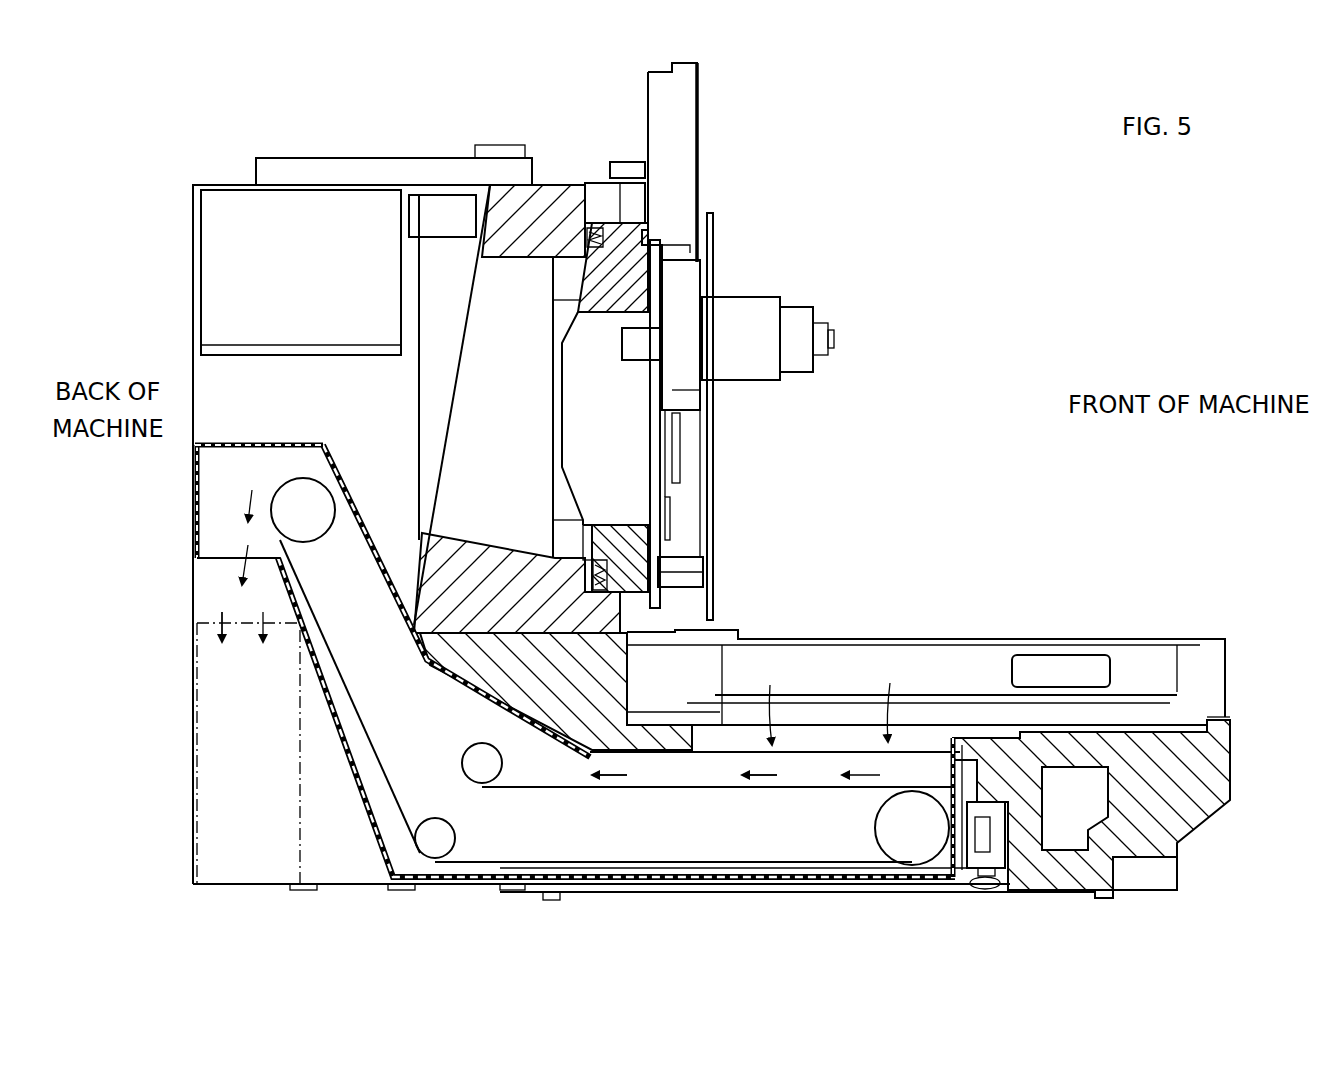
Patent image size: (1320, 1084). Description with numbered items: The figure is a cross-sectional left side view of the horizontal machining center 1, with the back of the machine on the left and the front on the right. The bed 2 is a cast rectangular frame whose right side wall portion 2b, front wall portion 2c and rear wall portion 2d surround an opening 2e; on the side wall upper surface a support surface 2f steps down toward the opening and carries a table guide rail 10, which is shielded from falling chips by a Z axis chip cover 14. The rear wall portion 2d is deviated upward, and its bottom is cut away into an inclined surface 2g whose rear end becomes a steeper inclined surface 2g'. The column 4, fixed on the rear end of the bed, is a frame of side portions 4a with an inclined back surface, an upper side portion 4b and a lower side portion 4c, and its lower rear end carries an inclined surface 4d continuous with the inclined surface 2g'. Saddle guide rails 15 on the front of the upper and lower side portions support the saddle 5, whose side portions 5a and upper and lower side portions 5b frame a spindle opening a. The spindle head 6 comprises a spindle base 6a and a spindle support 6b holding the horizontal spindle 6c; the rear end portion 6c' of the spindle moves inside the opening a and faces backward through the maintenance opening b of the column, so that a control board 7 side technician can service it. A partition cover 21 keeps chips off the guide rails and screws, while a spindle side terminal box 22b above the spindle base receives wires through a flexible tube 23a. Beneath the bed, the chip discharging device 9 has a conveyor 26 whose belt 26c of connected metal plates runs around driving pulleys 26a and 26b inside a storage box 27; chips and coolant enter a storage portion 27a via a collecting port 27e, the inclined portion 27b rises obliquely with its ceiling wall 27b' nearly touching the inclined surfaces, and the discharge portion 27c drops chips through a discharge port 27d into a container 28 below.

The horizontal machining center 1 is at (936, 127).
The bed 2 is at (1085, 637).
The right side wall portion 2b is at (980, 638).
The front wall portion 2c is at (1063, 878).
The rear wall portion 2d is at (575, 757).
The opening 2e is at (858, 737).
The support surface 2f is at (788, 720).
The inclined surface 2g is at (500, 791).
The inclined surface 2g' is at (393, 687).
The column 4 is at (448, 380).
The side portion 4a is at (455, 412).
The upper side portion 4b is at (547, 182).
The lower side portion 4c is at (476, 555).
The inclined surface 4d is at (402, 627).
The saddle 5 is at (558, 390).
The side portion 5a is at (580, 438).
The side portion 5b is at (628, 222).
The spindle head 6 is at (768, 292).
The spindle base 6a is at (683, 397).
The spindle support 6b is at (733, 383).
The spindle 6c is at (836, 330).
The rear end portion 6c' is at (631, 376).
The control board 7 is at (192, 184).
The chip discharging device 9 is at (667, 897).
The table guide rail 10 is at (828, 693).
The Z axis chip cover 14 is at (923, 682).
The saddle guide rail 15 is at (587, 236).
The partition cover 21 is at (716, 520).
The spindle side terminal box 22b is at (697, 118).
The flexible tube 23a is at (682, 460).
The conveyor 26 is at (753, 867).
The driving pulley 26a is at (900, 845).
The driving pulley 26b is at (280, 505).
The belt 26c is at (817, 867).
The storage box 27 is at (380, 858).
The storage portion 27a is at (628, 887).
The inclined portion 27b is at (273, 858).
The ceiling wall 27b' is at (424, 736).
The discharge portion 27c is at (193, 481).
The discharge port 27d is at (232, 562).
The collecting port 27e is at (920, 760).
The container 28 is at (195, 780).
The spindle opening a is at (597, 353).
The maintenance opening b is at (482, 327).